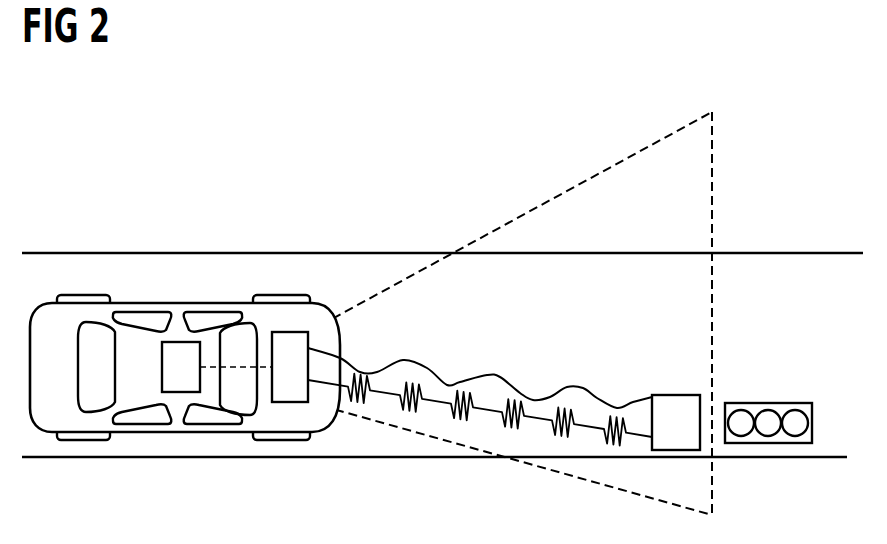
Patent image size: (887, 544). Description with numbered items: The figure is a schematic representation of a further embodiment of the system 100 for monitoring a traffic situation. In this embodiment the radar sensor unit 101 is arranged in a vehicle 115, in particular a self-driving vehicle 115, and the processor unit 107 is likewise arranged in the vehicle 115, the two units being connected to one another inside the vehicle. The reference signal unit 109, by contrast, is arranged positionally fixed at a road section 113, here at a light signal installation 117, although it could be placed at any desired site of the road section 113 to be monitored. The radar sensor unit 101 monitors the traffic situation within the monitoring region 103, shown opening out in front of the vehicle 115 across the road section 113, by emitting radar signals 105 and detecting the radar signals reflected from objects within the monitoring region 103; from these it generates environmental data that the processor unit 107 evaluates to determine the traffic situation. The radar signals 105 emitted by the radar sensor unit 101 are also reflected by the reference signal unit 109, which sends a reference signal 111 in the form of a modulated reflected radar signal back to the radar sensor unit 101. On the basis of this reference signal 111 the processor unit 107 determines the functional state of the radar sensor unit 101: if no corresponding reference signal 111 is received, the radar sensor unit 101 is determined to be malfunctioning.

The system for monitoring a traffic situation 100 is at (140, 120).
The radar sensor unit 101 is at (288, 331).
The monitoring region 103 is at (575, 187).
The radar signals 105 is at (491, 372).
The processor unit 107 is at (182, 341).
The reference signal unit 109 is at (676, 394).
The reference signal 111 is at (591, 422).
The road section 113 is at (782, 252).
The vehicle 115 is at (186, 432).
The light signal installation 117 is at (768, 401).